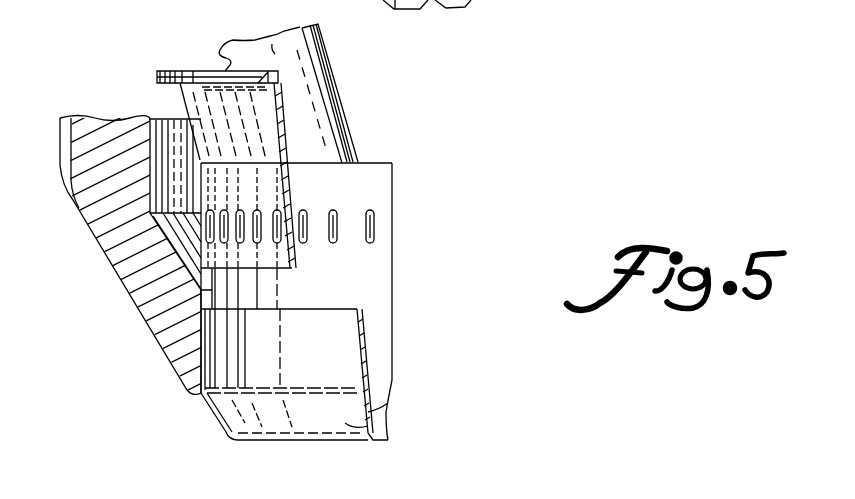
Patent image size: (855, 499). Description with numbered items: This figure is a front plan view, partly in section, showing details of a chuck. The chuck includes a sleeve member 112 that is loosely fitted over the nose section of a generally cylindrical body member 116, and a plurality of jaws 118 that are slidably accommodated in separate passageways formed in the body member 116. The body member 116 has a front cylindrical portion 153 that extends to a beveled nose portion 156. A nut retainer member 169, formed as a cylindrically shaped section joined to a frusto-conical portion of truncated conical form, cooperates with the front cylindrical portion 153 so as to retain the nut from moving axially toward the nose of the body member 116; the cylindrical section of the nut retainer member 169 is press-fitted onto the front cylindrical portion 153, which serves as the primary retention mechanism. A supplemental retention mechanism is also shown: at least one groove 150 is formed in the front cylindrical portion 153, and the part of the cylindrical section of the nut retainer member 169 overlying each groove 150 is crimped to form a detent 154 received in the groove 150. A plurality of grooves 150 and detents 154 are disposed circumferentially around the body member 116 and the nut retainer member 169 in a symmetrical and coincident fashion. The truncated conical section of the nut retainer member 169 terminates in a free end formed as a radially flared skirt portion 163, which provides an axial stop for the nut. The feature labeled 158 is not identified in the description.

The sleeve member 112 is at (100, 198).
The body member 116 is at (392, 368).
The jaws 118 is at (273, 45).
The groove 150 is at (330, 212).
The front cylindrical portion 153 is at (380, 265).
The detent 154 is at (240, 212).
The beveled nose portion 156 is at (380, 413).
The bottom lip 158 is at (345, 423).
The skirt portion 163 is at (157, 80).
The nut retainer member 169 is at (287, 115).